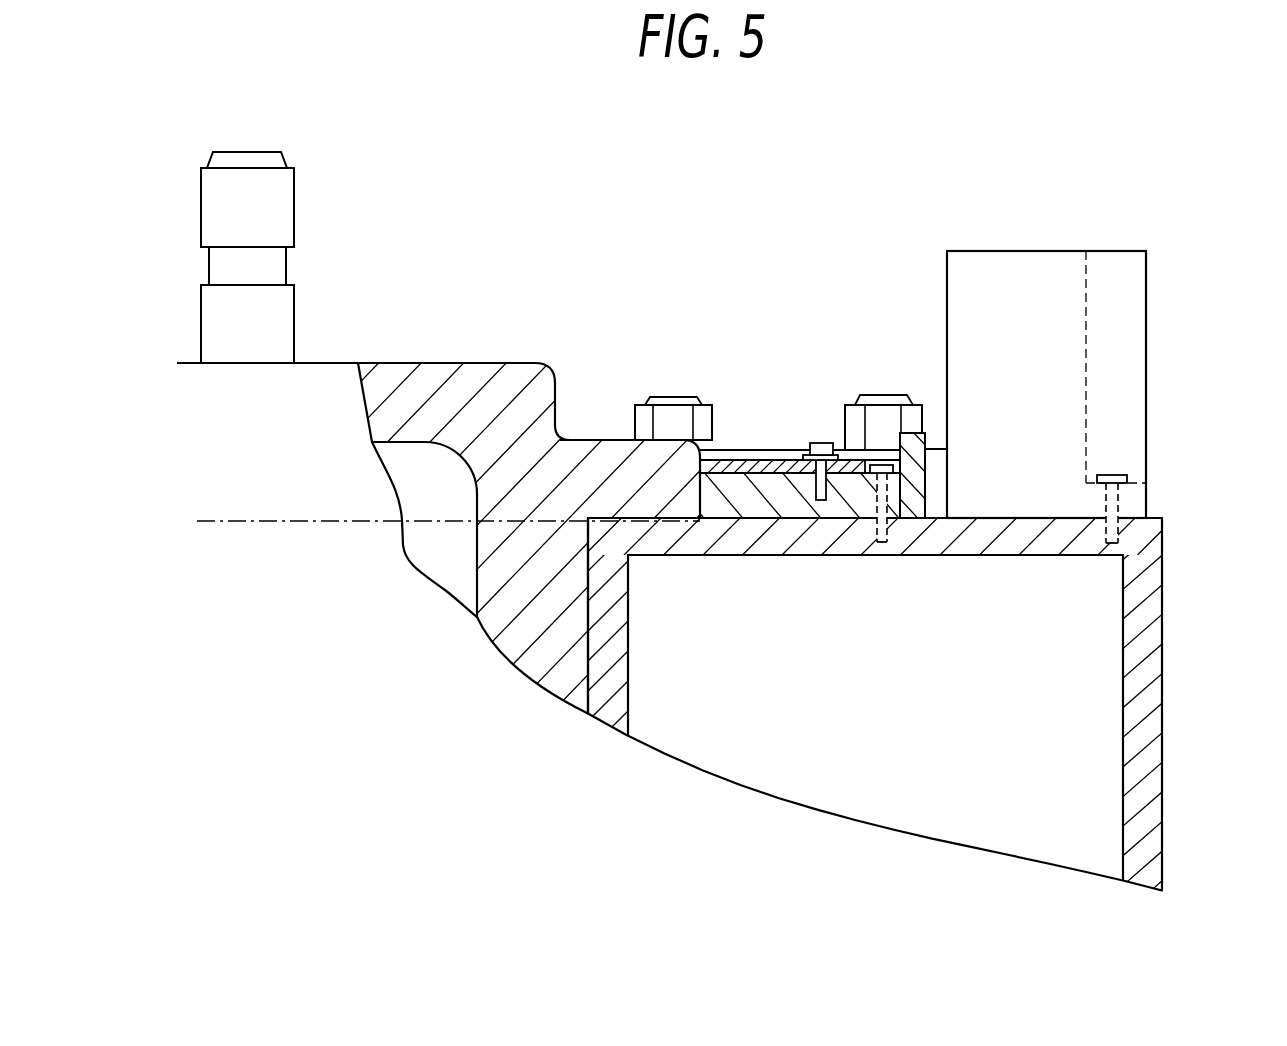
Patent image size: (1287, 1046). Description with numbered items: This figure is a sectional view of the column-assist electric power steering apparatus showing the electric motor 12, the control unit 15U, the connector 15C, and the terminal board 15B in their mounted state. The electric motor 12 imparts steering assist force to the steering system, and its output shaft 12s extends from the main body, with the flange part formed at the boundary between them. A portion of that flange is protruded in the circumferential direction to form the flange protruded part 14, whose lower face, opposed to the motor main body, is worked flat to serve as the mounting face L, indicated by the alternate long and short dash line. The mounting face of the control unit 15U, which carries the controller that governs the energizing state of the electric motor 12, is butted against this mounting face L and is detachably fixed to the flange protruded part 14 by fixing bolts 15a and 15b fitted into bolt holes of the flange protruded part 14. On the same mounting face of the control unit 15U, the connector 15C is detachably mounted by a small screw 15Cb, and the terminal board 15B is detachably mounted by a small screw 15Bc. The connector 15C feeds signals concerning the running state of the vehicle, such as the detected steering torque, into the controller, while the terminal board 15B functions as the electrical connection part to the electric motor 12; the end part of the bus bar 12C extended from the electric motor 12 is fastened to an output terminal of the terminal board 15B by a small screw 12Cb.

The electric motor 12 is at (458, 378).
The output shaft 12s is at (244, 152).
The flange protruded part 14 is at (584, 440).
The fixing bolt 15a is at (670, 396).
The bus bar 12C is at (757, 458).
The small screw 12Cb is at (822, 443).
The small screw 15Bc is at (878, 465).
The fixing bolt 15b is at (893, 395).
The connector 15C is at (1035, 251).
The small screw 15Cb is at (1112, 475).
The terminal board 15B is at (767, 505).
The control unit 15U is at (1147, 650).
The mounting face L is at (240, 517).